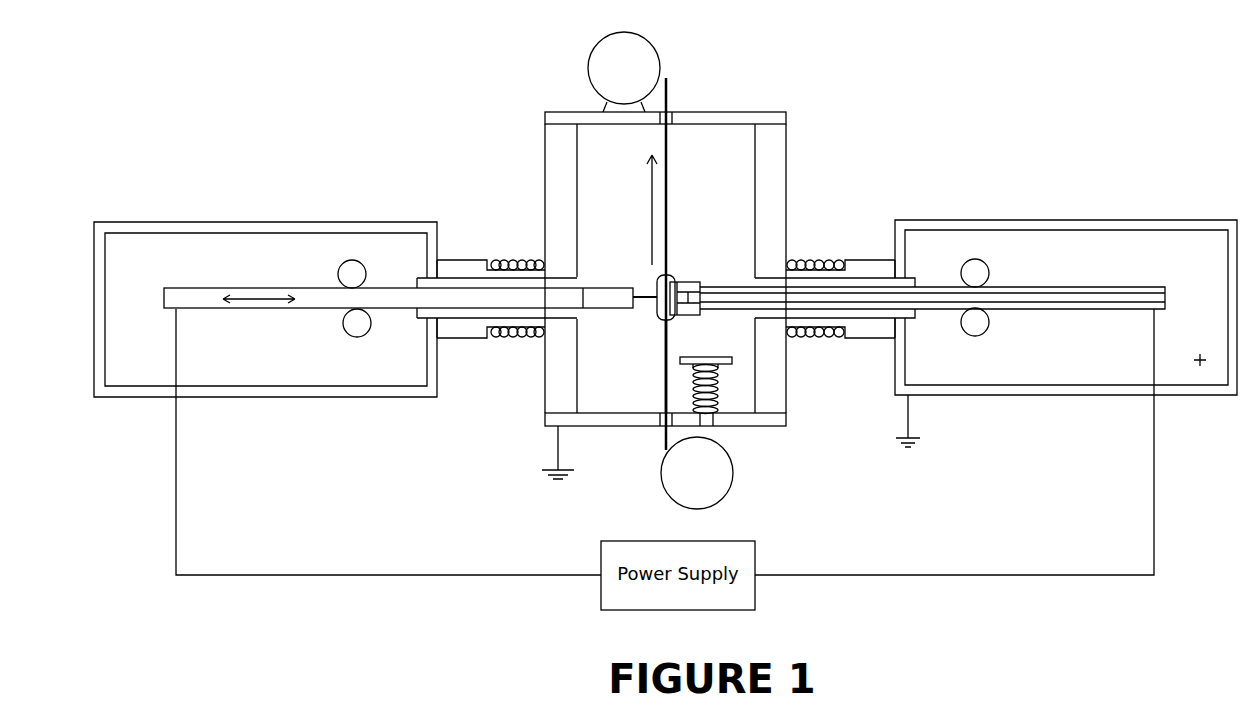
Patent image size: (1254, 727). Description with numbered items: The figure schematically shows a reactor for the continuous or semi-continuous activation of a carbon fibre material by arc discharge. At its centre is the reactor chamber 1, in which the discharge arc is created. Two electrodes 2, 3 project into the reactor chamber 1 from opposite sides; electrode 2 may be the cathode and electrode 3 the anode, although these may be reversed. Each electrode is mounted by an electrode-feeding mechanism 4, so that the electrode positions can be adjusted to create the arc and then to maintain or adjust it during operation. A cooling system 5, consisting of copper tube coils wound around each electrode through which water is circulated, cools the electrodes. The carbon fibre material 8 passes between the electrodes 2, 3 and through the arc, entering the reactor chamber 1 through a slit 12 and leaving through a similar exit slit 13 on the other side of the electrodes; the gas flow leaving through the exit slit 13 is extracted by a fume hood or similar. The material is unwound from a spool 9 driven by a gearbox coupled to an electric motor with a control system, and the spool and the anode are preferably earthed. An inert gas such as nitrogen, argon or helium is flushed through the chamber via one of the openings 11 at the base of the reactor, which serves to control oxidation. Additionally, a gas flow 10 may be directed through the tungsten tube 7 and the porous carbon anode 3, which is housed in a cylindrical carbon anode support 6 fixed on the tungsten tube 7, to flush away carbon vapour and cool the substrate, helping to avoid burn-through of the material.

The reactor chamber 1 is at (590, 157).
The electrode 2 is at (633, 293).
The electrode 3 is at (670, 297).
The electrode-feeding mechanisms 4 is at (357, 327).
The cooling system 5 is at (520, 262).
The cylindrical carbon anode support 6 is at (710, 258).
The tungsten tube 7 is at (723, 292).
The carbon fibre material 8 is at (665, 360).
The spool 9 is at (688, 475).
The gas flow 10 is at (610, 55).
The openings 11 is at (715, 417).
The slit 12 is at (658, 427).
The exit slit 13 is at (673, 112).